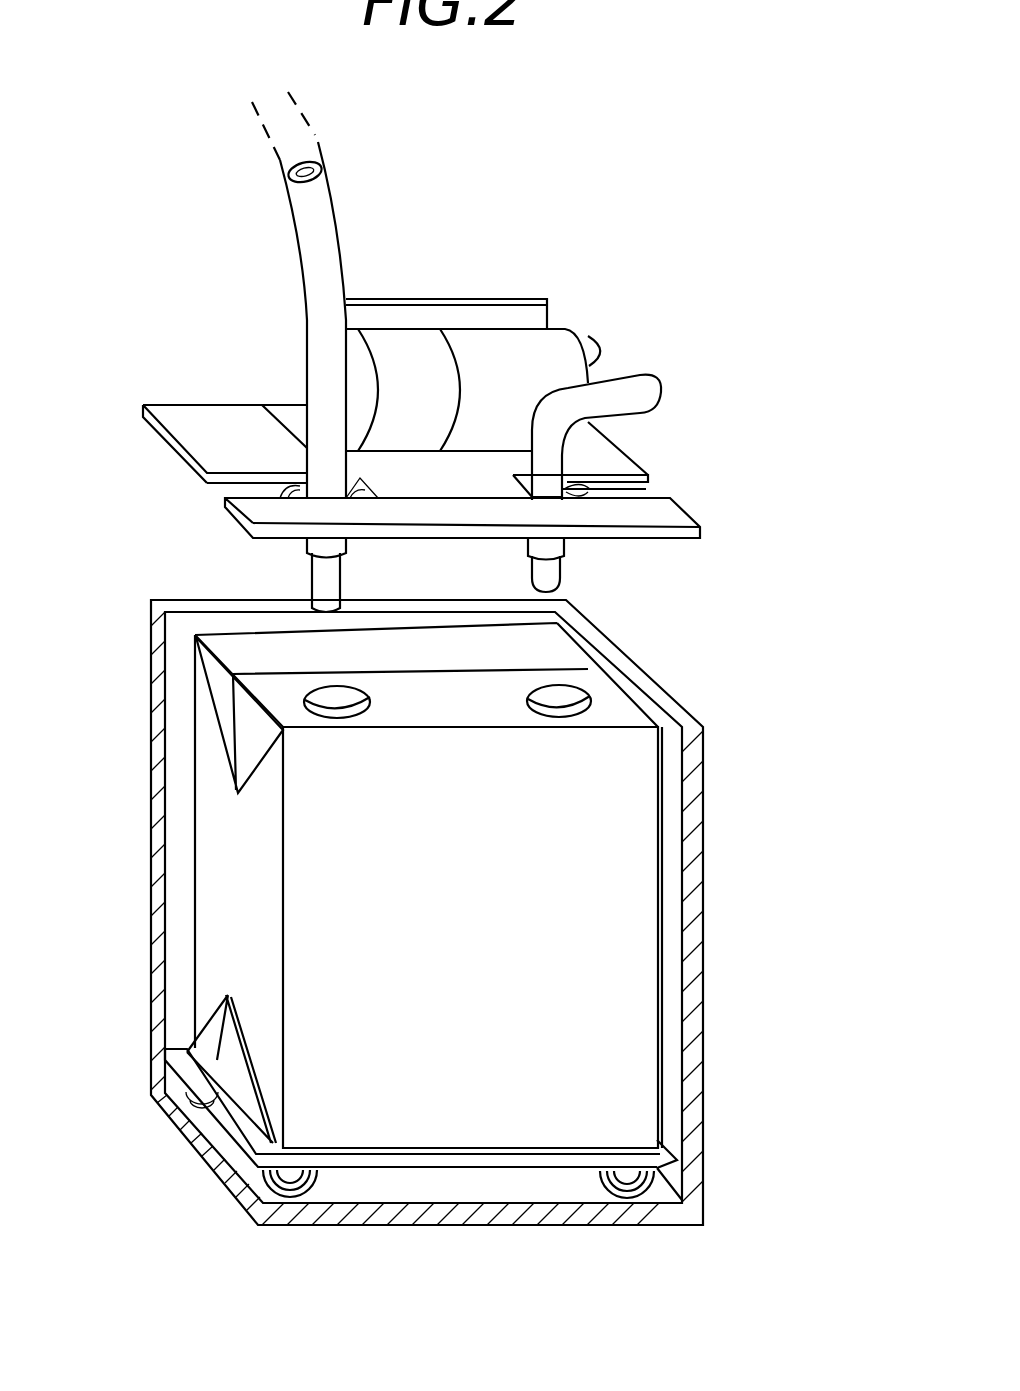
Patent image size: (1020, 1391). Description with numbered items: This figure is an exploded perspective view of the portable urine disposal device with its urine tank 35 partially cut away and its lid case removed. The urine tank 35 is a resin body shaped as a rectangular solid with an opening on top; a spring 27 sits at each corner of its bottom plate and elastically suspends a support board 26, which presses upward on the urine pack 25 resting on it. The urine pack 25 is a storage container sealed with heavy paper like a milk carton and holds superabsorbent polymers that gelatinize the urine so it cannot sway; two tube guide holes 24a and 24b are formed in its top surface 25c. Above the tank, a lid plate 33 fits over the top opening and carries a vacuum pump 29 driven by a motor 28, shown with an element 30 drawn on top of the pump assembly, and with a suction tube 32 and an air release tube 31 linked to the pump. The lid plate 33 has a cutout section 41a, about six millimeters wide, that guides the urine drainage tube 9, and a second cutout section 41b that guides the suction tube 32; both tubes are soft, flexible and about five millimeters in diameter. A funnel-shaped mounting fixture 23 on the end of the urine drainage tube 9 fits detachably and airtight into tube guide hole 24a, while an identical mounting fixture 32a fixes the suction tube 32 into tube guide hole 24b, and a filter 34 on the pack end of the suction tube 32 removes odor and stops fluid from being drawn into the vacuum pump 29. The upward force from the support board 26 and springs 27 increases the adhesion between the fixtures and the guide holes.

The urine drainage tube 9 is at (318, 362).
The mounting fixture 23 is at (308, 553).
The tube guide hole 24a is at (335, 703).
The tube guide hole 24b is at (577, 705).
The urine pack 25 is at (590, 885).
The top surface 25c is at (448, 713).
The support board 26 is at (218, 1125).
The spring 27 is at (240, 1207).
The motor 28 is at (405, 358).
The vacuum pump 29 is at (500, 360).
The upper plate 30 is at (538, 312).
The air release tube 31 is at (590, 343).
The suction tube 32 is at (645, 395).
The mounting fixture 32a is at (564, 548).
The lid plate 33 is at (656, 516).
The filter 34 is at (548, 580).
The urine tank 35 is at (695, 1012).
The cutout section 41a is at (223, 482).
The cutout section 41b is at (653, 474).